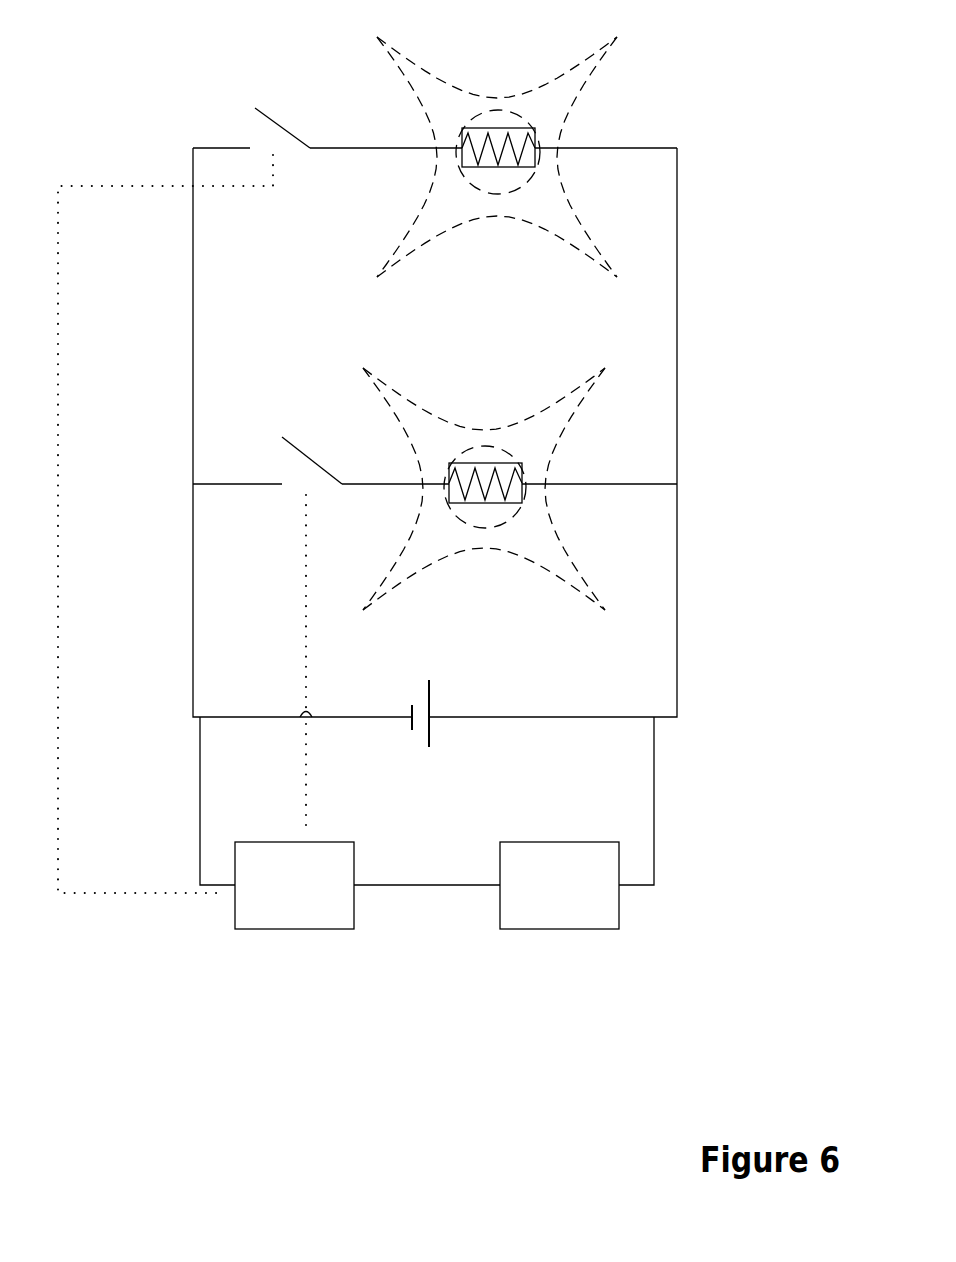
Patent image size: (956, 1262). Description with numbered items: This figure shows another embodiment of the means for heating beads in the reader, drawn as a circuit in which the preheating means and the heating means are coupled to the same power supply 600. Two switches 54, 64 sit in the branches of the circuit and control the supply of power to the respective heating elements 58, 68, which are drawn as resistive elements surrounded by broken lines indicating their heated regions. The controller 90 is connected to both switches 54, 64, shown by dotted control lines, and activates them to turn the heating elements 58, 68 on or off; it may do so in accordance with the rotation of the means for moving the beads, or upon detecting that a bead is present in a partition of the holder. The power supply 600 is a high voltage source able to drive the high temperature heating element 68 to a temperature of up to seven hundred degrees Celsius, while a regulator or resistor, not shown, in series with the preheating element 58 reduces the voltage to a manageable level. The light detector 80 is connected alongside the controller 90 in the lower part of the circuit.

The switch 64 is at (283, 125).
The high temperature heating element 68 is at (497, 128).
The switch 54 is at (323, 467).
The preheating element 58 is at (489, 463).
The power supply 600 is at (422, 740).
The controller 90 is at (293, 929).
The light detector 80 is at (568, 929).